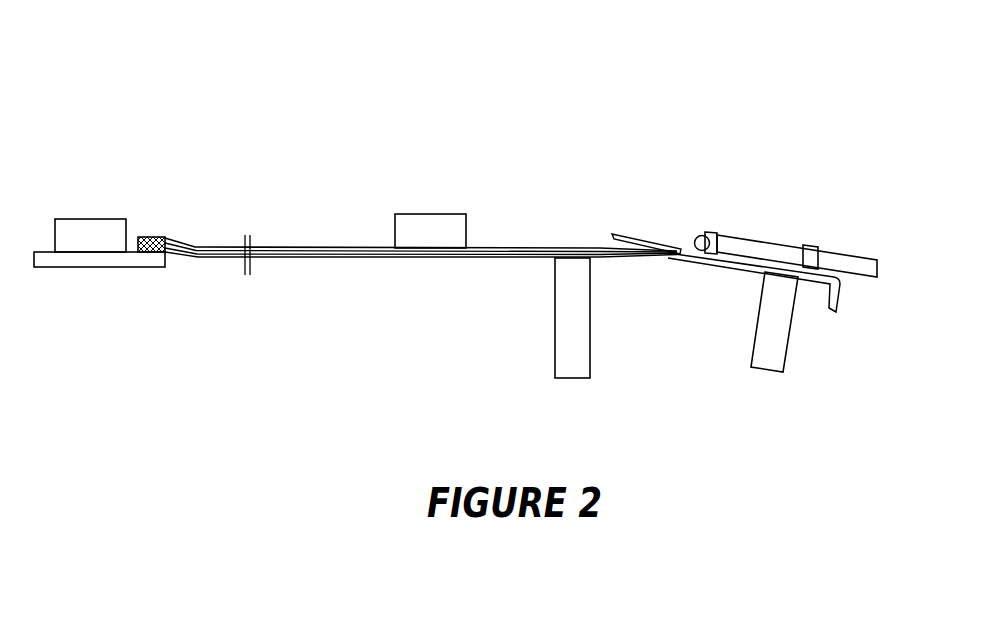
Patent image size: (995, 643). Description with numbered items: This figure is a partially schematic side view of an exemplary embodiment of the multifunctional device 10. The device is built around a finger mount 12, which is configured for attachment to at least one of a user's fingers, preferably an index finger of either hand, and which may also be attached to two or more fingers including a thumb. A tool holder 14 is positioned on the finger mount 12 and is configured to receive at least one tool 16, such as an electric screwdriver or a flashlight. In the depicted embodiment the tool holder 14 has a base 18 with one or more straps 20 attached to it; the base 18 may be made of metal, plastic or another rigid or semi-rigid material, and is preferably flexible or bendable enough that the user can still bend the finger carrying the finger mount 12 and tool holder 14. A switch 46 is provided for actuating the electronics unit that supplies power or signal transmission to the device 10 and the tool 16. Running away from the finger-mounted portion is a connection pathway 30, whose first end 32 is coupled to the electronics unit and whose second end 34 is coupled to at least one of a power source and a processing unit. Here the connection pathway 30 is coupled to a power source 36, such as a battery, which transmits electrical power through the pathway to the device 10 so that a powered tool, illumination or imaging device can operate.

The multifunctional device 10 is at (540, 197).
The finger mount 12 is at (575, 328).
The tool holder 14 is at (813, 245).
The tool 16 is at (748, 240).
The base 18 is at (737, 268).
The strap 20 is at (716, 229).
The connection pathway 30 is at (305, 247).
The first end 32 is at (707, 231).
The second end 34 is at (150, 237).
The power source 36 is at (80, 217).
The switch 46 is at (620, 236).